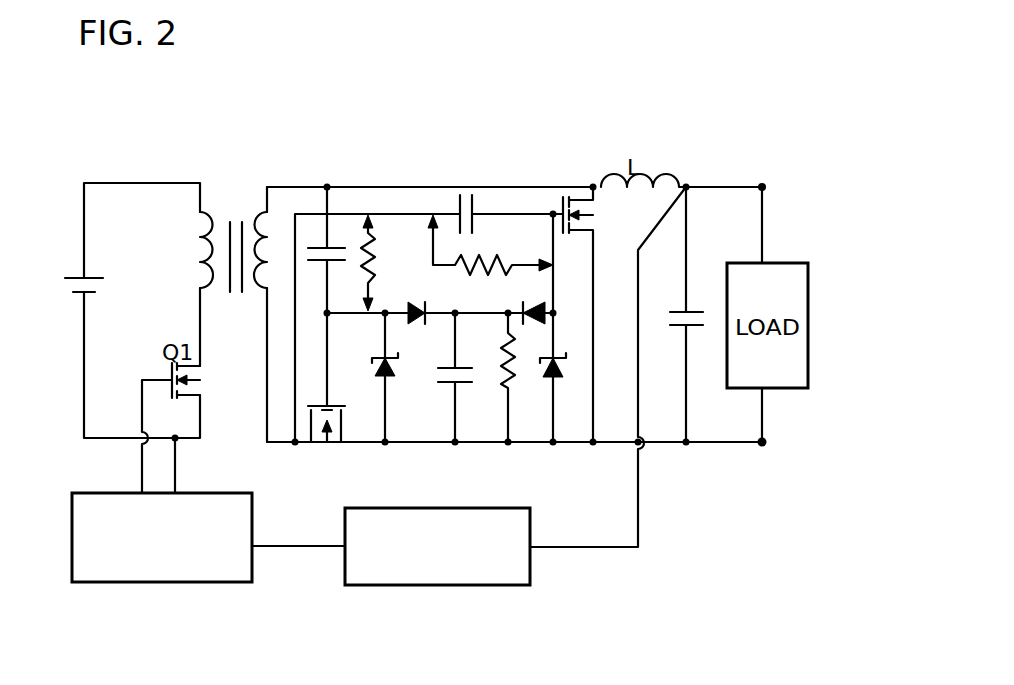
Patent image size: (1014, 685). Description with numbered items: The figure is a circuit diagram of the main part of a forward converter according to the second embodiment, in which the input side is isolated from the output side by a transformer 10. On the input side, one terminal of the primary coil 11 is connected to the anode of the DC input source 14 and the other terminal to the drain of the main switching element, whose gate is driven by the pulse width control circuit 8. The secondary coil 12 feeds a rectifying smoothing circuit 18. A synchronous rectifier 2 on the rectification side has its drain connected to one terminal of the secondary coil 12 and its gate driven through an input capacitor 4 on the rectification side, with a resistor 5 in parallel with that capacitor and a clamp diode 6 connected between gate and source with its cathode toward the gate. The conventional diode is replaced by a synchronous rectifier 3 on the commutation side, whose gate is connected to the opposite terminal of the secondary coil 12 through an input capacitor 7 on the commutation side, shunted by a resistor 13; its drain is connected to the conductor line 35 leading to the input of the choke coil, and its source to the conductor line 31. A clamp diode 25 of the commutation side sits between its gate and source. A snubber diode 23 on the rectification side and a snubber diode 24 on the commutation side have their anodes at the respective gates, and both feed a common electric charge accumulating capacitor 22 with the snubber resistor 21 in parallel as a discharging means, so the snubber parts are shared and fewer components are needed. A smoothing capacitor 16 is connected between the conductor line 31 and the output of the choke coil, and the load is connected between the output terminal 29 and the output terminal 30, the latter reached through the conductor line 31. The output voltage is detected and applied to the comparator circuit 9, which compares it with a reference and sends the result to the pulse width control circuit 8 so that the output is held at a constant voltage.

The synchronous rectifier on the rectification side 2 is at (338, 446).
The synchronous rectifier on the commutation side 3 is at (594, 216).
The input capacitor on the rectification side 4 is at (325, 277).
The resistor 5 is at (378, 253).
The clamp diode on the rectification side 6 is at (375, 362).
The input capacitor on the commutation side 7 is at (458, 200).
The pulse width control circuit 8 is at (175, 583).
The comparator circuit 9 is at (470, 587).
The transformer 10 is at (237, 240).
The primary coil 11 is at (200, 257).
The secondary coil 12 is at (268, 222).
The resistor 13 is at (482, 268).
The DC input source 14 is at (72, 283).
The smoothing capacitor 16 is at (668, 315).
The rectifying smoothing circuit 18 is at (539, 165).
The snubber resistor 21 is at (508, 384).
The electric charge accumulating capacitor 22 is at (476, 369).
The snubber diode on the rectification side 23 is at (408, 326).
The snubber diode on the commutation side 24 is at (553, 302).
The clamp diode of the commutation side 25 is at (551, 385).
The output terminal 29 is at (760, 185).
The output terminal 30 is at (756, 447).
The conductor line 31 is at (493, 446).
The conductor line 35 is at (486, 186).